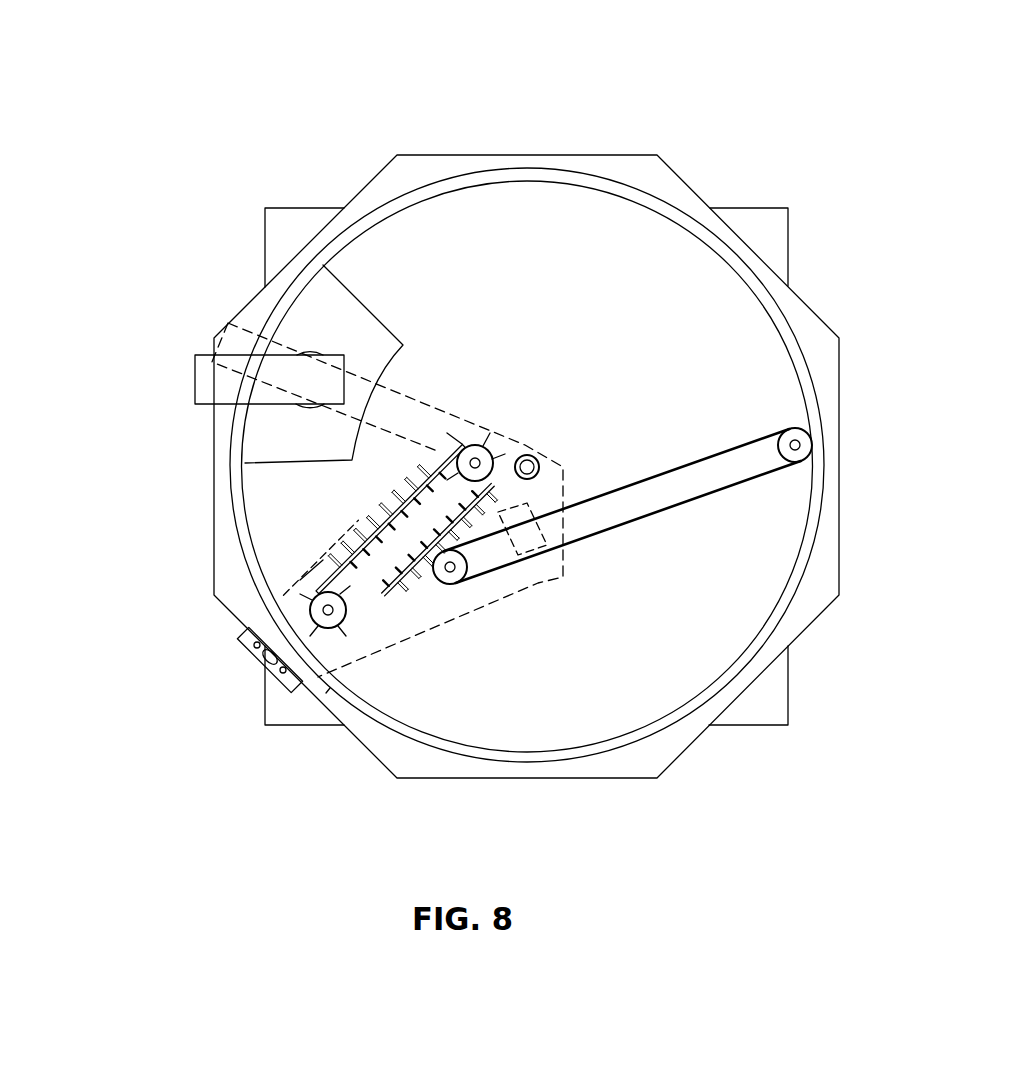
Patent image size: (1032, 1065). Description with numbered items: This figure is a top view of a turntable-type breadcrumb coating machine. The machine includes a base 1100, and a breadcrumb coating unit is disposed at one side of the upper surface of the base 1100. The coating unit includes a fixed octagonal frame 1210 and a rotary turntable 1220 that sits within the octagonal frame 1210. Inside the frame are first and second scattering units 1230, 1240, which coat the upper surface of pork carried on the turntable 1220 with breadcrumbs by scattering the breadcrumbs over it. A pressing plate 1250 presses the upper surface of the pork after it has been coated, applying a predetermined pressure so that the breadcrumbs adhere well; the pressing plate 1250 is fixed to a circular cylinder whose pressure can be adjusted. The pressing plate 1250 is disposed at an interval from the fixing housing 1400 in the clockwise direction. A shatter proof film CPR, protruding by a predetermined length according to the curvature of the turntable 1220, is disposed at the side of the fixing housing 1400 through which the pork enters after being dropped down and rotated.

The base 1100 is at (287, 222).
The octagonal frame 1210 is at (630, 165).
The turntable 1220 is at (737, 353).
The first scattering unit 1230 is at (293, 537).
The second scattering unit 1240 is at (712, 482).
The pressing plate 1250 is at (268, 435).
The fixing housing 1400 is at (245, 646).
The shatter proof film CPR is at (326, 693).